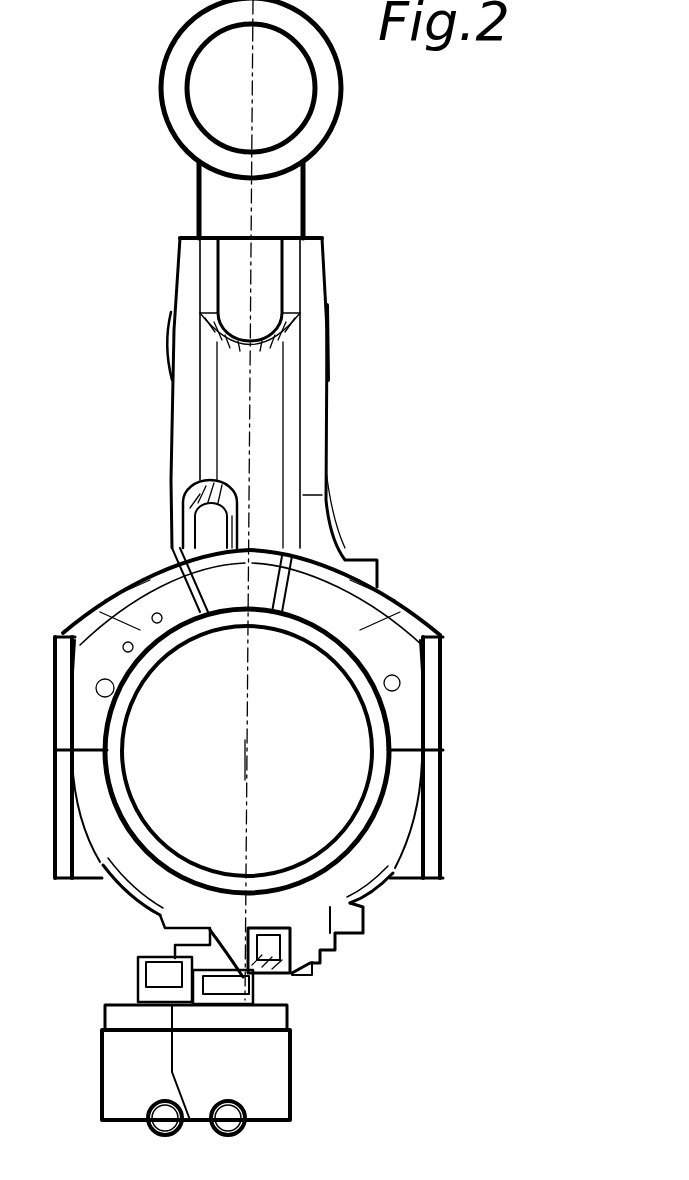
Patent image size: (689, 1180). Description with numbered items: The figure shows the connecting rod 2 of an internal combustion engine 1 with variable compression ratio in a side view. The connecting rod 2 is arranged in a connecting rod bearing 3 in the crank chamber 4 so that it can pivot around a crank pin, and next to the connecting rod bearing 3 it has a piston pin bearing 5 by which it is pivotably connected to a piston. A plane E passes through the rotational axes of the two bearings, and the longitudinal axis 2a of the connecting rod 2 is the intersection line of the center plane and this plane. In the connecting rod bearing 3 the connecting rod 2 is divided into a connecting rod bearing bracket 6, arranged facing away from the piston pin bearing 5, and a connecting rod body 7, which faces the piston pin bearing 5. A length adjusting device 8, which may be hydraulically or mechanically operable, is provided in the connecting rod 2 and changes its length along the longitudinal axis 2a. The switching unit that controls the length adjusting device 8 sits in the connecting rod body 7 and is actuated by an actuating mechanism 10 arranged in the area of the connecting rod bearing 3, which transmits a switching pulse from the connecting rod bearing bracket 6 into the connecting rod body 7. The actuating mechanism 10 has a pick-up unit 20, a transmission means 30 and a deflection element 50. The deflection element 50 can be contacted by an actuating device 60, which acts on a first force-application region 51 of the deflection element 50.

The internal combustion engine 1 is at (476, 240).
The connecting rod 2 is at (348, 416).
The longitudinal axis 2a is at (255, 226).
The connecting rod bearing 3 is at (171, 656).
The crank chamber 4 is at (452, 566).
The piston pin bearing 5 is at (232, 96).
The connecting rod bearing bracket 6 is at (120, 896).
The connecting rod body 7 is at (322, 534).
The length adjusting device 8 is at (212, 241).
The actuating mechanism 10 is at (355, 906).
The pick-up unit 20 is at (224, 583).
The transmission means 30 is at (405, 810).
The deflection element 50 is at (330, 970).
The first force-application region 51 is at (272, 975).
The actuating device 60 is at (276, 1092).
The plane E is at (247, 771).